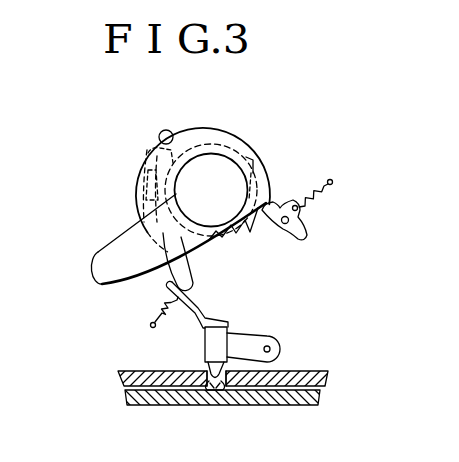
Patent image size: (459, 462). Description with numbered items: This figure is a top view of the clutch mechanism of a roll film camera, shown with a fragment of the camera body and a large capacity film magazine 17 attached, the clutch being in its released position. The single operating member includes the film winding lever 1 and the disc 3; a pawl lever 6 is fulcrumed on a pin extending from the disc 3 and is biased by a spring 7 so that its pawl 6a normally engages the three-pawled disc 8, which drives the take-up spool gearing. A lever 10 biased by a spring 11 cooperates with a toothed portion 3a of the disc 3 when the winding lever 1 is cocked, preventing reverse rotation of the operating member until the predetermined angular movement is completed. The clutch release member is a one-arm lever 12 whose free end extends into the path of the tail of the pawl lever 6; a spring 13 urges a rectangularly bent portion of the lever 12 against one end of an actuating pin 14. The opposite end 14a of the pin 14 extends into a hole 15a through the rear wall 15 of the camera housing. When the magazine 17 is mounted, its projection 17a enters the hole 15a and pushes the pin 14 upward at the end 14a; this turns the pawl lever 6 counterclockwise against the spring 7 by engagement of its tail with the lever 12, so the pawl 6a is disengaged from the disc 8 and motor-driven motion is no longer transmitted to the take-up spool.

The film winding lever 1 is at (108, 268).
The disc 3 is at (211, 137).
The toothed portion 3a is at (233, 239).
The pawl lever 6 is at (183, 278).
The pawl 6a is at (160, 161).
The spring 7 is at (152, 195).
The three-pawled disc 8 is at (248, 163).
The lever 10 is at (285, 230).
The spring 11 is at (325, 196).
The one-arm lever 12 is at (232, 332).
The spring 13 is at (162, 303).
The actuating pin 14 is at (212, 350).
The end of actuating pin 14a is at (203, 391).
The rear wall 15 is at (328, 377).
The hole 15a is at (257, 375).
The large capacity film magazine 17 is at (304, 395).
The projection 17a is at (215, 388).